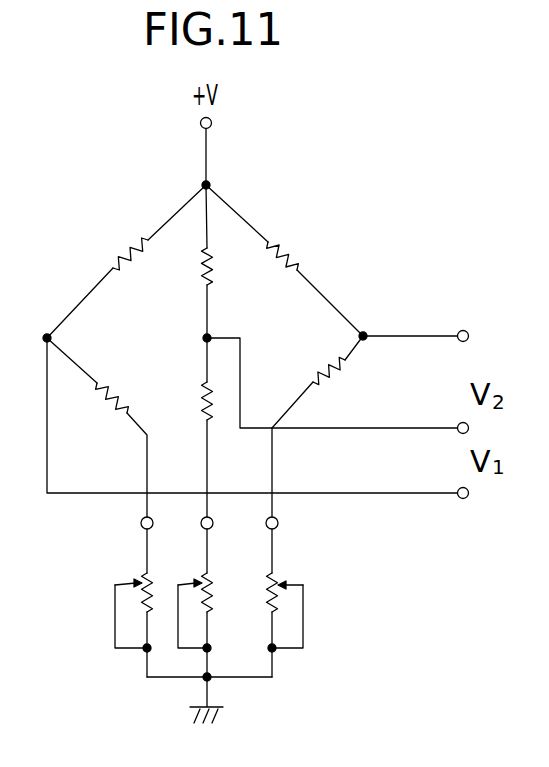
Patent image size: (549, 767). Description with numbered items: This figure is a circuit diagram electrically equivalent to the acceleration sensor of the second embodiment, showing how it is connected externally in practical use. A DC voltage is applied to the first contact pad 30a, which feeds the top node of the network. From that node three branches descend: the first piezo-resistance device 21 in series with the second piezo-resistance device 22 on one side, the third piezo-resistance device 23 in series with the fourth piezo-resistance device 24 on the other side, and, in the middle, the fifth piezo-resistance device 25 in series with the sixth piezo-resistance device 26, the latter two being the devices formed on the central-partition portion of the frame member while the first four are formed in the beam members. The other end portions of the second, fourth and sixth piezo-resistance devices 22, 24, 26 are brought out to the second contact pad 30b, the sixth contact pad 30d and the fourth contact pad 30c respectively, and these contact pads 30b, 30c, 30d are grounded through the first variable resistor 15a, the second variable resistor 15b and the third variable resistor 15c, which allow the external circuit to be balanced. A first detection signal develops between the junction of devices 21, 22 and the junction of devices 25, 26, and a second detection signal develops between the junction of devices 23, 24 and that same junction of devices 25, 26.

The first contact pad 30a is at (212, 124).
The first piezo-resistance device 21 is at (121, 246).
The second piezo-resistance device 22 is at (103, 384).
The third piezo-resistance device 23 is at (298, 247).
The fourth piezo-resistance device 24 is at (343, 372).
The fifth piezo-resistance device 25 is at (220, 268).
The sixth piezo-resistance device 26 is at (200, 388).
The second contact pad 30b is at (140, 523).
The fourth contact pad 30c is at (213, 526).
The sixth contact pad 30d is at (279, 523).
The first variable resistor 15a is at (138, 574).
The second variable resistor 15b is at (200, 575).
The third variable resistor 15c is at (280, 577).